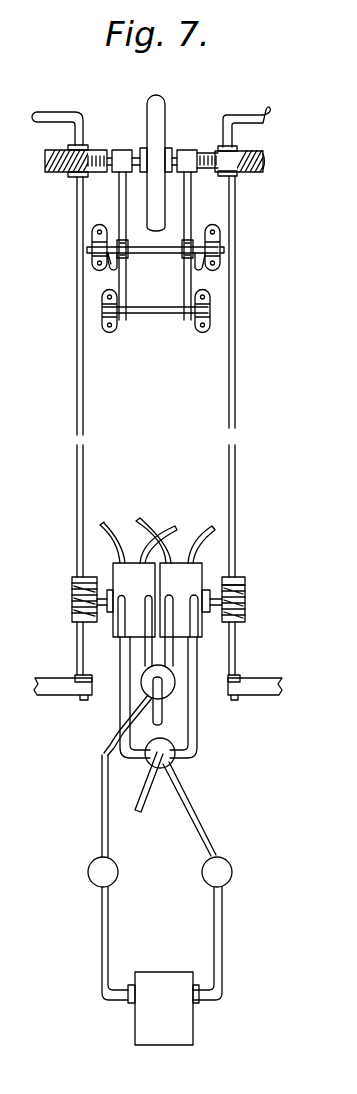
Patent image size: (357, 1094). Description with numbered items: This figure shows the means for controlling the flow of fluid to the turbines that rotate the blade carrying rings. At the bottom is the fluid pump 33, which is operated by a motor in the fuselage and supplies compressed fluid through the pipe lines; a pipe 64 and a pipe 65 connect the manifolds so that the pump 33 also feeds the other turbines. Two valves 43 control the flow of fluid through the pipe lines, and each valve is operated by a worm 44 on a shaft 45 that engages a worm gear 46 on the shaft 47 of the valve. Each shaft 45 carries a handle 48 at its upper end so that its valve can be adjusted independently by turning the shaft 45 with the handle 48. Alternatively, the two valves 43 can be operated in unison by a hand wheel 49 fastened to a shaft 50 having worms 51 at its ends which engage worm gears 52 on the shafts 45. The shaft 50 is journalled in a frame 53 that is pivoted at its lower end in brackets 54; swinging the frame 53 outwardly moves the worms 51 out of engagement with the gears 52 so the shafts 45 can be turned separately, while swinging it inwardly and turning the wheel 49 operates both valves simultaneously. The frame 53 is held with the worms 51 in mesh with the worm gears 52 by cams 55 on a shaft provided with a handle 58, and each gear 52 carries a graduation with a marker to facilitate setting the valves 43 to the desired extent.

The fluid pump 33 is at (182, 1028).
The valves 43 is at (178, 567).
The worm 44 is at (246, 608).
The shaft 45 is at (237, 522).
The worm gear 46 is at (242, 580).
The shaft of the valve 47 is at (209, 606).
The handle 48 is at (257, 110).
The hand wheel 49 is at (165, 100).
The shaft 50 is at (207, 150).
The worms 51 is at (243, 173).
The worm gears 52 is at (264, 161).
The frame 53 is at (192, 222).
The brackets 54 is at (208, 312).
The cams 55 is at (184, 253).
The handle 58 is at (208, 272).
The pipe 64 is at (162, 712).
The pipe 65 is at (143, 795).